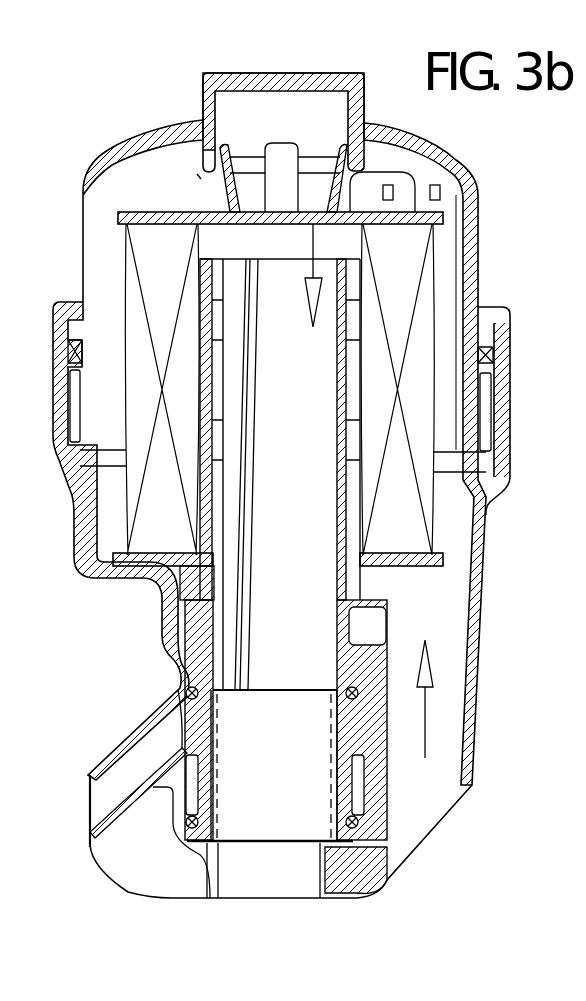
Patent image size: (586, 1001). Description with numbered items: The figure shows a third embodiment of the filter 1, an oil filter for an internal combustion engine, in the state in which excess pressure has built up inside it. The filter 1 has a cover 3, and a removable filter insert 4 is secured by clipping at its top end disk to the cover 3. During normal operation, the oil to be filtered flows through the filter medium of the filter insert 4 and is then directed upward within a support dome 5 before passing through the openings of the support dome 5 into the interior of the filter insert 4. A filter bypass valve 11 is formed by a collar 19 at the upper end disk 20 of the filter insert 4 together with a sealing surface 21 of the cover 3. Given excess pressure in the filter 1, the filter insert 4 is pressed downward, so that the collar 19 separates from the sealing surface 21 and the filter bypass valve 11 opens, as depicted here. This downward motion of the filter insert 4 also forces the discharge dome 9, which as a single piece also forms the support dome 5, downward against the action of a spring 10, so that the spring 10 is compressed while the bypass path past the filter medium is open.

The filter 1 is at (504, 149).
The cover 3 is at (420, 147).
The filter insert 4 is at (407, 313).
The support dome 5 is at (340, 388).
The discharge dome 9 is at (343, 723).
The spring 10 is at (333, 800).
The filter bypass valve 11 is at (195, 172).
The collar 19 is at (200, 183).
The upper end disk 20 is at (150, 214).
The sealing surface 21 is at (210, 167).